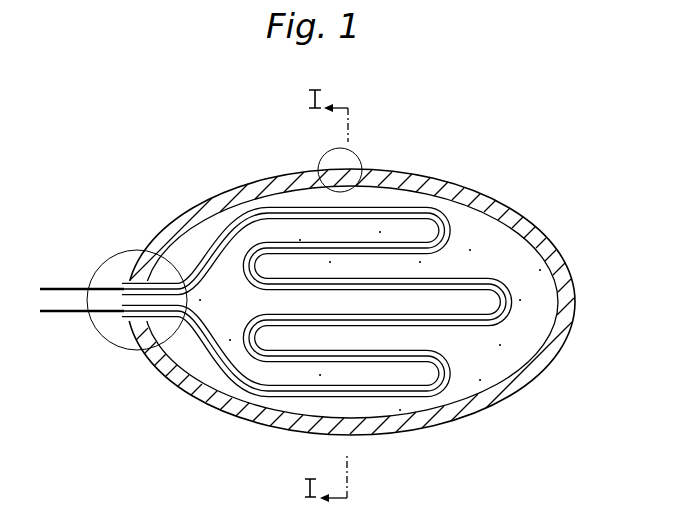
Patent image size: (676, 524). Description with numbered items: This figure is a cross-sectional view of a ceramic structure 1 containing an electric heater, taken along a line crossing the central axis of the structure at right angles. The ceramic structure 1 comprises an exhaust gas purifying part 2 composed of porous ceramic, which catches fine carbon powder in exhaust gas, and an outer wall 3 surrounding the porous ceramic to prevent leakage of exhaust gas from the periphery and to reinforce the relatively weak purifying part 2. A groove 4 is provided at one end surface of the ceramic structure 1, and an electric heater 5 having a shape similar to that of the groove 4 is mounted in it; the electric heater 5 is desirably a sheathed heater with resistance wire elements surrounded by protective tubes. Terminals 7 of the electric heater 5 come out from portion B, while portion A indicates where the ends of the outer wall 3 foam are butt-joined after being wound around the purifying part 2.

The ceramic structure 1 is at (503, 198).
The exhaust gas purifying part 2 is at (513, 253).
The outer wall 3 is at (440, 183).
The groove 4 is at (300, 206).
The electric heater 5 is at (280, 208).
The terminals 7 is at (73, 288).
The portion A is at (364, 148).
The portion B is at (123, 243).